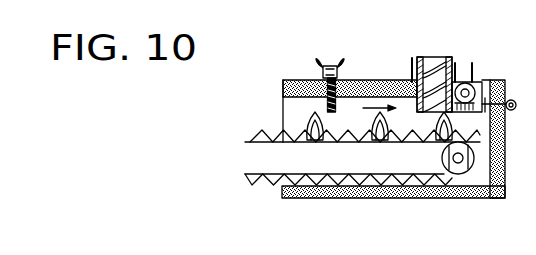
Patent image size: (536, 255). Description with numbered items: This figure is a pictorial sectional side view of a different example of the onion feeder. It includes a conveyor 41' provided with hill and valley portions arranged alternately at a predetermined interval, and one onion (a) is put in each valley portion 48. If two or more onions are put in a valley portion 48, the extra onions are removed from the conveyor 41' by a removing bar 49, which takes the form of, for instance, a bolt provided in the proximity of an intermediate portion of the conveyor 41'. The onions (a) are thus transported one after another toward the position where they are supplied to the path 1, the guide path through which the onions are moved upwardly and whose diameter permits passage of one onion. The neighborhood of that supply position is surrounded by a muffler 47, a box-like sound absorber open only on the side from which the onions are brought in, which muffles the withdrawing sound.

The path 1 is at (437, 56).
The muffler 47 is at (387, 80).
The valley portion 48 is at (340, 134).
The removing bar 49 is at (323, 103).
The onion a is at (307, 122).
The conveyor 41' is at (320, 145).